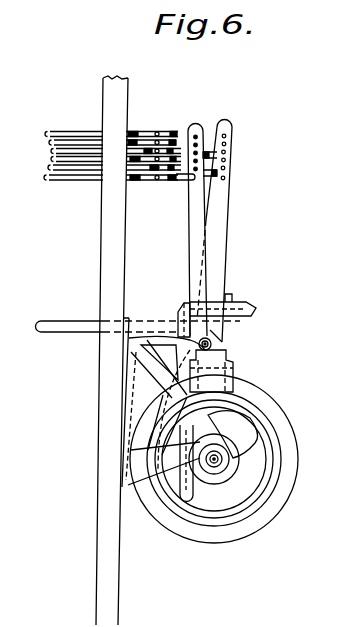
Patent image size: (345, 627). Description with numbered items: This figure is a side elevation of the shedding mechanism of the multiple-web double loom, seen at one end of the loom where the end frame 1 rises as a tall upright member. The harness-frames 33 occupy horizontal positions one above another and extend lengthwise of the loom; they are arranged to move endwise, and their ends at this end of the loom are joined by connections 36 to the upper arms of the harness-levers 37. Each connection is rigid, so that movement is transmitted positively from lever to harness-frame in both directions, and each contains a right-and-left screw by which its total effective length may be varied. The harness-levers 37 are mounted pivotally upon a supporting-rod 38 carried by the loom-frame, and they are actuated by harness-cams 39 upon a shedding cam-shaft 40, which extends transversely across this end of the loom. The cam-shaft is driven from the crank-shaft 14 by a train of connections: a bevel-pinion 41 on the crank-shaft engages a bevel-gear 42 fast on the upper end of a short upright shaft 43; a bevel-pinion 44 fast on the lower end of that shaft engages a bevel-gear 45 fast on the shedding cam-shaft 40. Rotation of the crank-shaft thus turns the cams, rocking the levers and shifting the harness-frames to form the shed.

The end frame 1 is at (127, 594).
The crank-shaft 14 is at (79, 315).
The harness-frame 33 is at (60, 125).
The connection 36 is at (149, 127).
The harness-lever 37 is at (182, 246).
The supporting-rod 38 is at (212, 343).
The harness-cam 39 is at (264, 427).
The shedding cam-shaft 40 is at (218, 460).
The bevel-pinion 41 is at (165, 321).
The bevel-gear 42 is at (247, 298).
The short upright shaft 43 is at (230, 338).
The bevel-pinion 44 is at (246, 383).
The bevel-gear 45 is at (273, 531).